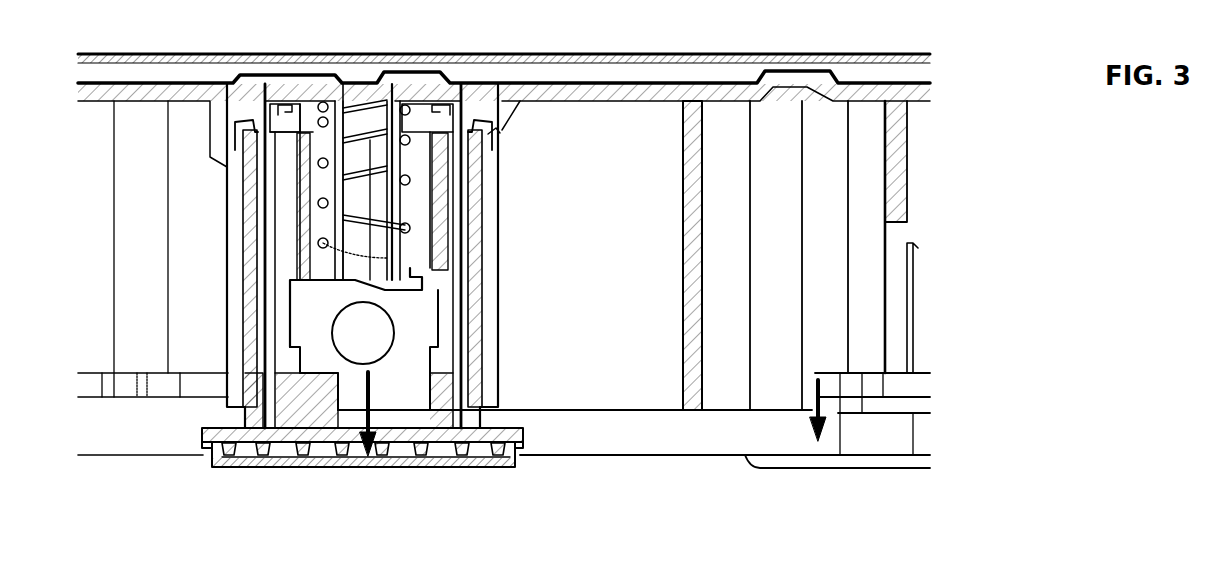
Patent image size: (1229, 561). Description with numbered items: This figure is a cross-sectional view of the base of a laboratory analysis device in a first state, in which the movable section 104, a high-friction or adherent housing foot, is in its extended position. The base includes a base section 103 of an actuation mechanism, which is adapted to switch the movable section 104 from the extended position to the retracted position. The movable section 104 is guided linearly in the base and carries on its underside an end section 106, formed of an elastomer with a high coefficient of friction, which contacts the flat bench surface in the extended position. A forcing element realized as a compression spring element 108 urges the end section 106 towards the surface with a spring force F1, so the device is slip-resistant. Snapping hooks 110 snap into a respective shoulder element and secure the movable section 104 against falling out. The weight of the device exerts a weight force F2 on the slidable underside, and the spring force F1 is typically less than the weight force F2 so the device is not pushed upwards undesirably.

The base section 103 is at (493, 266).
The movable section 104 is at (203, 455).
The end section 106 is at (310, 470).
The spring element 108 is at (413, 227).
The snapping hook 110 is at (493, 130).
The spring force F1 is at (385, 400).
The weight force F2 is at (870, 398).